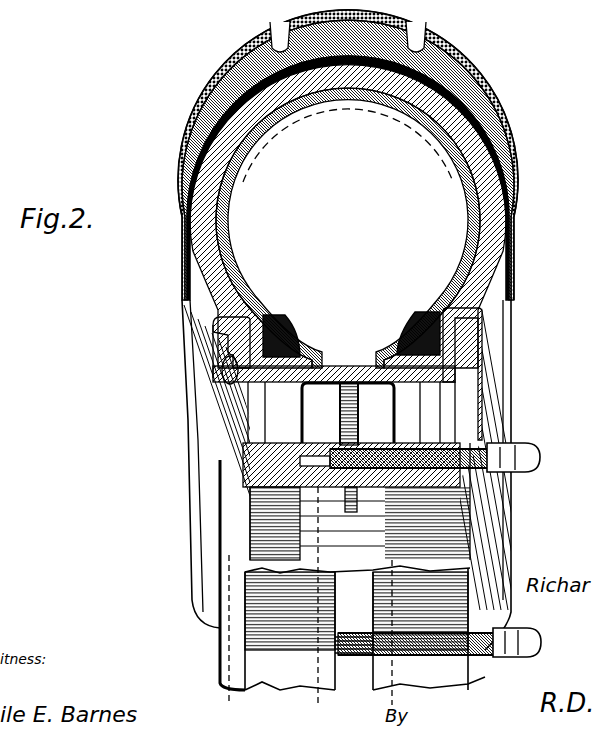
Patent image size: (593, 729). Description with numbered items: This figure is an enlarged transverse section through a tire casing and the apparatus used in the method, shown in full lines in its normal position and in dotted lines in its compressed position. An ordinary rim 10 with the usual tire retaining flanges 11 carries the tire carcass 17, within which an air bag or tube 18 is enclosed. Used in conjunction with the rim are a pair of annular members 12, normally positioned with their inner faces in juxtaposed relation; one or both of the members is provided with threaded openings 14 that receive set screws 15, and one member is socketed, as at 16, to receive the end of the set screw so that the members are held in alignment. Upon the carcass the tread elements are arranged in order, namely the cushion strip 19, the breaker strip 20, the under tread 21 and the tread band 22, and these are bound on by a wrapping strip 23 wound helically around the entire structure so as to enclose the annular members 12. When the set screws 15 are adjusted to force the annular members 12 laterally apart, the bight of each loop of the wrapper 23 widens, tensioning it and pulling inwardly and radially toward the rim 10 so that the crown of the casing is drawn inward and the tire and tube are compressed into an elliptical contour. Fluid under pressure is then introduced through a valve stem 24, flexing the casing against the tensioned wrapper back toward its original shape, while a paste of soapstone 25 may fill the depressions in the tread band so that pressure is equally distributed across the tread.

The rim 10 is at (460, 358).
The tire retaining flanges 11 is at (225, 337).
The annular members 12 is at (370, 608).
The threaded openings 14 is at (373, 442).
The set screws 15 is at (541, 455).
The socket 16 is at (318, 488).
The tire carcass 17 is at (500, 196).
The air bag or tube 18 is at (228, 216).
The cushion strip 19 is at (337, 60).
The breaker strip 20 is at (215, 77).
The under tread 21 is at (506, 145).
The tread band 22 is at (440, 68).
The wrapping strip 23 is at (186, 290).
The valve stem 24 is at (340, 408).
The paste of soapstone 25 is at (200, 107).